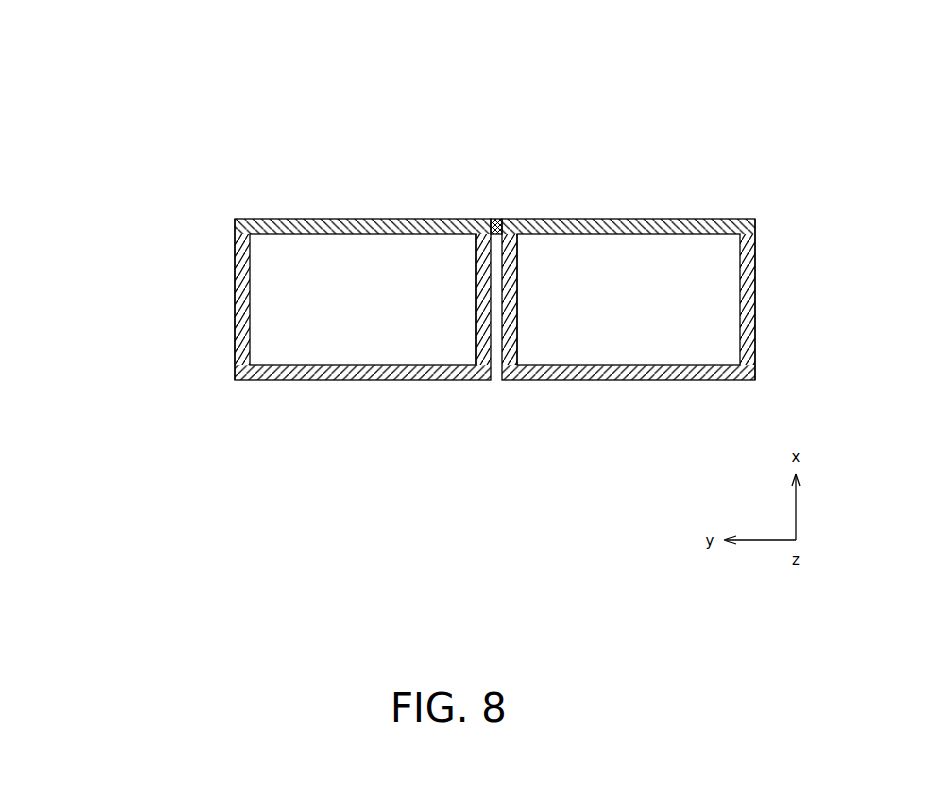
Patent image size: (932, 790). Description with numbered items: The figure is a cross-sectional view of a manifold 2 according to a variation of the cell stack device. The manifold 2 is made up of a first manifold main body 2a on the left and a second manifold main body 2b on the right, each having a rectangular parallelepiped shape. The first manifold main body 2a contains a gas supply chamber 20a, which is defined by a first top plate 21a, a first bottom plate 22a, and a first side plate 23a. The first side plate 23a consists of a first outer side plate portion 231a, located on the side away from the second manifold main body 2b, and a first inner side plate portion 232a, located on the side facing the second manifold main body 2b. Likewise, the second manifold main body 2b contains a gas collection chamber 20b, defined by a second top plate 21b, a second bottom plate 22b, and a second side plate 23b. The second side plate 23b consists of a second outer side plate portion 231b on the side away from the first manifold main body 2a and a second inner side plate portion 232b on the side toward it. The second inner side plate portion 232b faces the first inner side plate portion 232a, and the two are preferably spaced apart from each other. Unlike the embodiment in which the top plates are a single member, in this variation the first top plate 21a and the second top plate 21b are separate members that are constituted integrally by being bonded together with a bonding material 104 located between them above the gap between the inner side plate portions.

The manifold 2 is at (606, 116).
The first manifold main body 2a is at (228, 215).
The second manifold main body 2b is at (759, 210).
The gas supply chamber 20a is at (392, 305).
The gas collection chamber 20b is at (665, 305).
The first top plate 21a is at (338, 218).
The second top plate 21b is at (647, 217).
The first bottom plate 22a is at (310, 380).
The second bottom plate 22b is at (663, 380).
The first side plate 23a is at (232, 273).
The second side plate 23b is at (757, 273).
The first outer side plate portion 231a is at (235, 323).
The second outer side plate portion 231b is at (757, 310).
The first inner side plate portion 232a is at (477, 320).
The second inner side plate portion 232b is at (517, 320).
The bonding material 104 is at (496, 217).